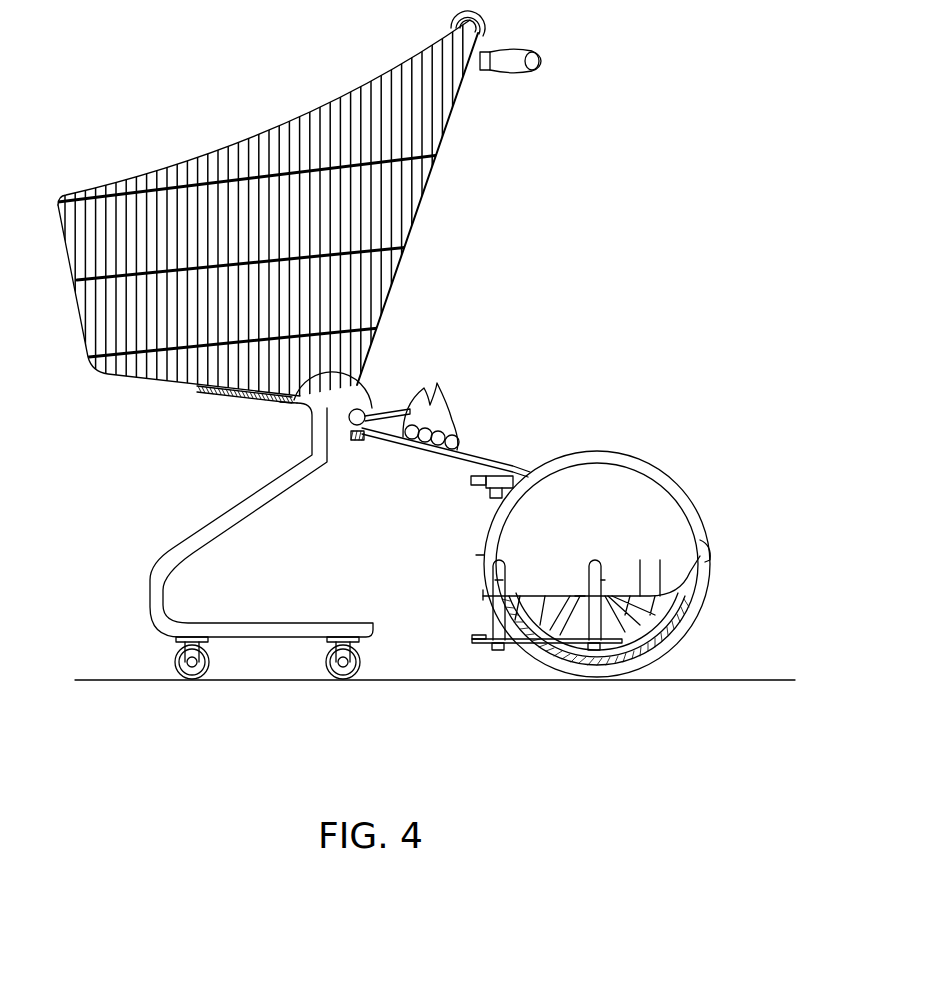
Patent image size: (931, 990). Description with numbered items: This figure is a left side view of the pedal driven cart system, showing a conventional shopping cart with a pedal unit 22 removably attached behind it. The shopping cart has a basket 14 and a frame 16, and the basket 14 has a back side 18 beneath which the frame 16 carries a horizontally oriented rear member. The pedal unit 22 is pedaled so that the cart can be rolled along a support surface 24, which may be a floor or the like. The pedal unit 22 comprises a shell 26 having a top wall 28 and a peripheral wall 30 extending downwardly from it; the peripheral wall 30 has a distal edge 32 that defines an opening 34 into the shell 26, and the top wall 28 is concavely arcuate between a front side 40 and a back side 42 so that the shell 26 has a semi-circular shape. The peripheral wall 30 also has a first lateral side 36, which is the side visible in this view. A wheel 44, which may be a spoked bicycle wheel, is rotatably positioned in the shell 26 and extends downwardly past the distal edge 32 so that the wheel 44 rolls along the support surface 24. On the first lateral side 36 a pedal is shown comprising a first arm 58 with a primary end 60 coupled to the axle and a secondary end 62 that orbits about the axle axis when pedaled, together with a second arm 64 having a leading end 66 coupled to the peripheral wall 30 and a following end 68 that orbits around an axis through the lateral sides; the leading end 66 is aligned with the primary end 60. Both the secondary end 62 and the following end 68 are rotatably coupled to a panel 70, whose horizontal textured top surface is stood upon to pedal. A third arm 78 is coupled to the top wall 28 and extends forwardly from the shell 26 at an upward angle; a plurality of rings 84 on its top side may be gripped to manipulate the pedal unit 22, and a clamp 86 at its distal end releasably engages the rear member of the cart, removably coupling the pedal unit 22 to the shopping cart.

The basket 14 is at (413, 62).
The frame 16 is at (223, 513).
The back side 18 is at (418, 228).
The pedal unit 22 is at (574, 559).
The support surface 24 is at (752, 679).
The shell 26 is at (692, 493).
The top wall 28 is at (585, 449).
The peripheral wall 30 is at (543, 582).
The distal edge 32 is at (655, 600).
The opening 34 is at (690, 606).
The first lateral side 36 is at (628, 592).
The front side 40 is at (482, 558).
The back side 42 is at (712, 550).
The wheel 44 is at (530, 648).
The first arm 58 is at (605, 572).
The primary end 60 is at (598, 562).
The secondary end 62 is at (594, 650).
The second arm 64 is at (497, 585).
The leading end 66 is at (494, 556).
The following end 68 is at (497, 650).
The panel 70 is at (580, 596).
The third arm 78 is at (495, 465).
The rings 84 is at (431, 402).
The clamp 86 is at (387, 412).